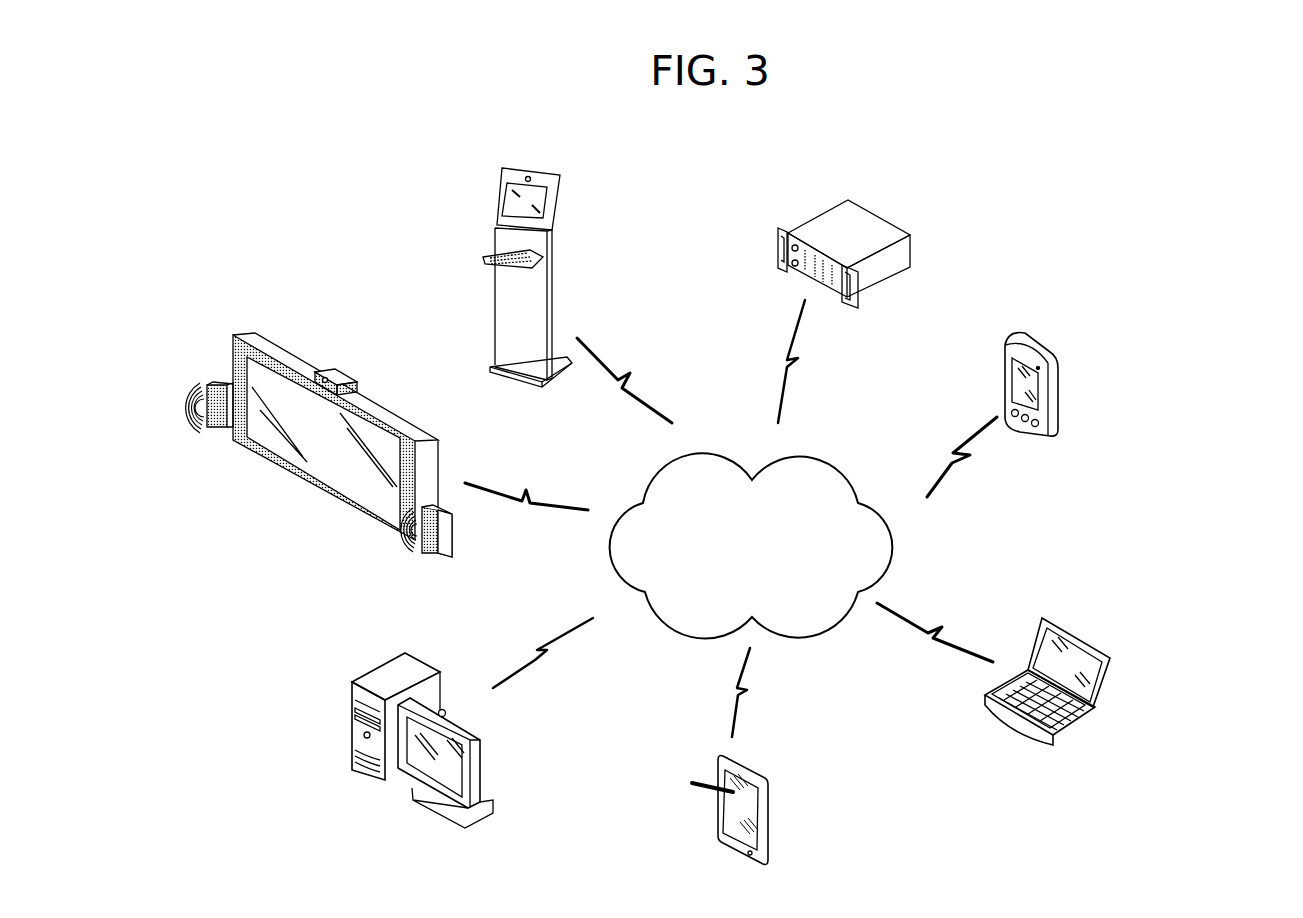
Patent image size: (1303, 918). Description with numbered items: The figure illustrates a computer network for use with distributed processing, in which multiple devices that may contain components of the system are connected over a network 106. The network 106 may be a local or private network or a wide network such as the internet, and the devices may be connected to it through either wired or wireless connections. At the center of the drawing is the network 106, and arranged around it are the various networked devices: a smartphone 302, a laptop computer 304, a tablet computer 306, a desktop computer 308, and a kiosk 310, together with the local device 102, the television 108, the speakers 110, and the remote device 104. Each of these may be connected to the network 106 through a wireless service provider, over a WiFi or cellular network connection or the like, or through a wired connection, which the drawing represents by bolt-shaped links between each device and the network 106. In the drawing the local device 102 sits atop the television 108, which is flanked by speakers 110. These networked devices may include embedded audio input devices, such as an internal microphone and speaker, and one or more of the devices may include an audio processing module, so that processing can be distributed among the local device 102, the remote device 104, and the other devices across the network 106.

The local device 102 is at (318, 373).
The remote device 104 is at (823, 215).
The network 106 is at (822, 466).
The television 108 is at (343, 483).
The speaker 110 is at (203, 386).
The smartphone 302 is at (1058, 390).
The laptop computer 304 is at (1110, 658).
The tablet computer 306 is at (765, 808).
The desktop computer 308 is at (336, 692).
The kiosk 310 is at (493, 242).